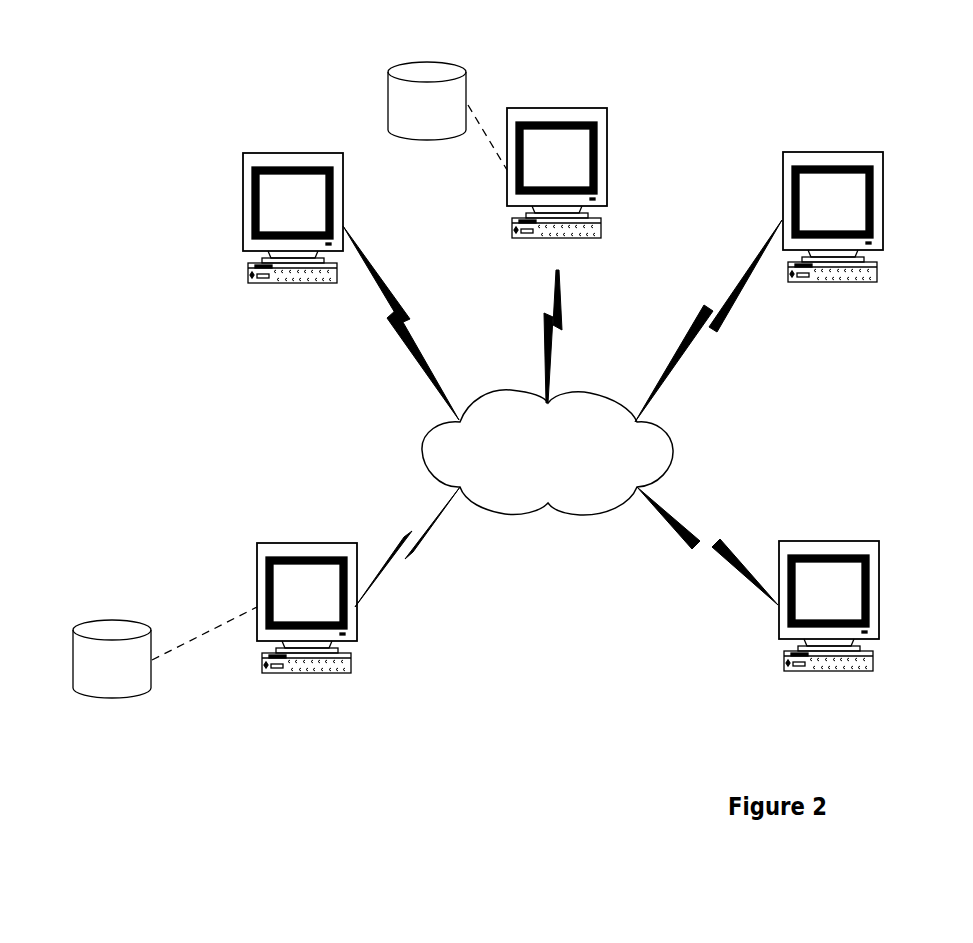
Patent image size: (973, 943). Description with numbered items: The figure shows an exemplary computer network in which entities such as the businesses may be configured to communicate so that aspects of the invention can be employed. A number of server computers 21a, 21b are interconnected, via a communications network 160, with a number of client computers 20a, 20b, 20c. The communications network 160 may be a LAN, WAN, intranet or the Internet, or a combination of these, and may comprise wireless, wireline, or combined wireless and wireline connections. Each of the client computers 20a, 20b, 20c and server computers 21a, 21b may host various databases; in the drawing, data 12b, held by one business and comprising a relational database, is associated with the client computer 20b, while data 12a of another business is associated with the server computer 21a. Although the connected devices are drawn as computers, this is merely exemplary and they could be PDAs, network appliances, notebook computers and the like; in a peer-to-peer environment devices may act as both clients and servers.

The data 12a is at (113, 620).
The data 12b is at (428, 62).
The client computer 20a is at (292, 153).
The client computer 20b is at (557, 108).
The client computer 20c is at (833, 152).
The server computer 21a is at (292, 543).
The server computer 21b is at (862, 541).
The communications network 160 is at (585, 520).